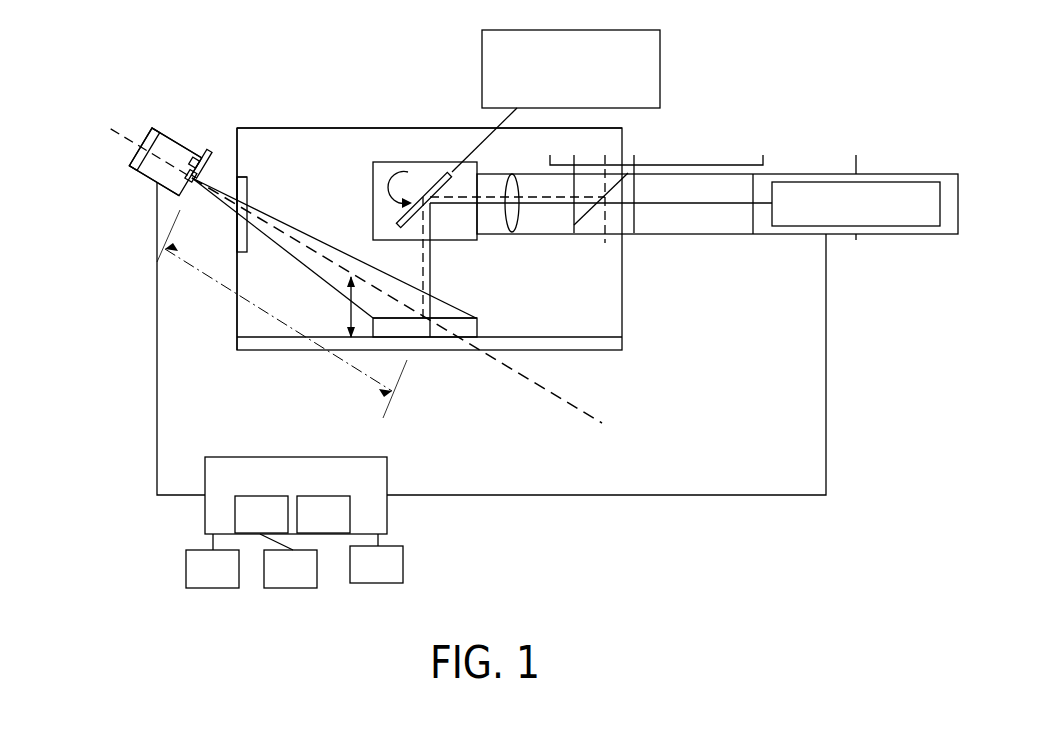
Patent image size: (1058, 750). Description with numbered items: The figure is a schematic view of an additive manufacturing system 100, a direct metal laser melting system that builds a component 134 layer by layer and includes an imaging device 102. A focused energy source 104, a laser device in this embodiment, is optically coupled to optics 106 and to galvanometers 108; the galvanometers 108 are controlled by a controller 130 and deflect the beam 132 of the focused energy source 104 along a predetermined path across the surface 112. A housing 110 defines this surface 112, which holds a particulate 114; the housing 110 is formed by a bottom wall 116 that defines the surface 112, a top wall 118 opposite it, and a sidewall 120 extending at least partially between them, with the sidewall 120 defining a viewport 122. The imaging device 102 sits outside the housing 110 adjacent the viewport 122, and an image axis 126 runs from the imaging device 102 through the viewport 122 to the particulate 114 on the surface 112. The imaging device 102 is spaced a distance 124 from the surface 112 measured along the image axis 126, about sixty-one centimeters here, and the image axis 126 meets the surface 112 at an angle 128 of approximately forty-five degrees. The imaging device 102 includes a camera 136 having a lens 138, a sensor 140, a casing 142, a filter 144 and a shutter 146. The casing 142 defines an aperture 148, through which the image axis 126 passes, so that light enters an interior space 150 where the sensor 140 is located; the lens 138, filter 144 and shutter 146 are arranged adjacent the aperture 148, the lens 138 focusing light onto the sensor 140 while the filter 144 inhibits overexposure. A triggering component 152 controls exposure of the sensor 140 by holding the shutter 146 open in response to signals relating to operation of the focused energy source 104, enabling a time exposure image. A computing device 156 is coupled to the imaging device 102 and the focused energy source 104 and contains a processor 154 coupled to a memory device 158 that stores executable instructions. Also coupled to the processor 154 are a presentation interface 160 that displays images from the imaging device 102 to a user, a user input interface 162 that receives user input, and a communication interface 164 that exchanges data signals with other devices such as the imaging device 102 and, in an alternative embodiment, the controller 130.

The additive manufacturing system 100 is at (812, 95).
The imaging device 102 is at (128, 120).
The focused energy source 104 is at (912, 217).
The optics 106 is at (512, 234).
The galvanometers 108 is at (427, 168).
The housing 110 is at (293, 138).
The surface 112 is at (325, 315).
The particulate 114 is at (425, 328).
The bottom wall 116 is at (268, 352).
The top wall 118 is at (340, 127).
The sidewall 120 is at (235, 310).
The viewport 122 is at (240, 176).
The distance 124 is at (347, 360).
The image axis 126 is at (545, 390).
The angle 128 is at (350, 272).
The controller 130 is at (549, 85).
The beam 132 is at (431, 266).
The component 134 is at (437, 347).
The camera 136 is at (172, 133).
The lens 138 is at (249, 184).
The sensor 140 is at (134, 180).
The casing 142 is at (195, 162).
The filter 144 is at (193, 187).
The shutter 146 is at (215, 147).
The aperture 148 is at (247, 177).
The interior space 150 is at (148, 163).
The triggering component 152 is at (181, 157).
The processor 154 is at (241, 528).
The computing device 156 is at (264, 488).
The memory device 158 is at (302, 528).
The presentation interface 160 is at (191, 585).
The user input interface 162 is at (269, 585).
The communication interface 164 is at (355, 580).